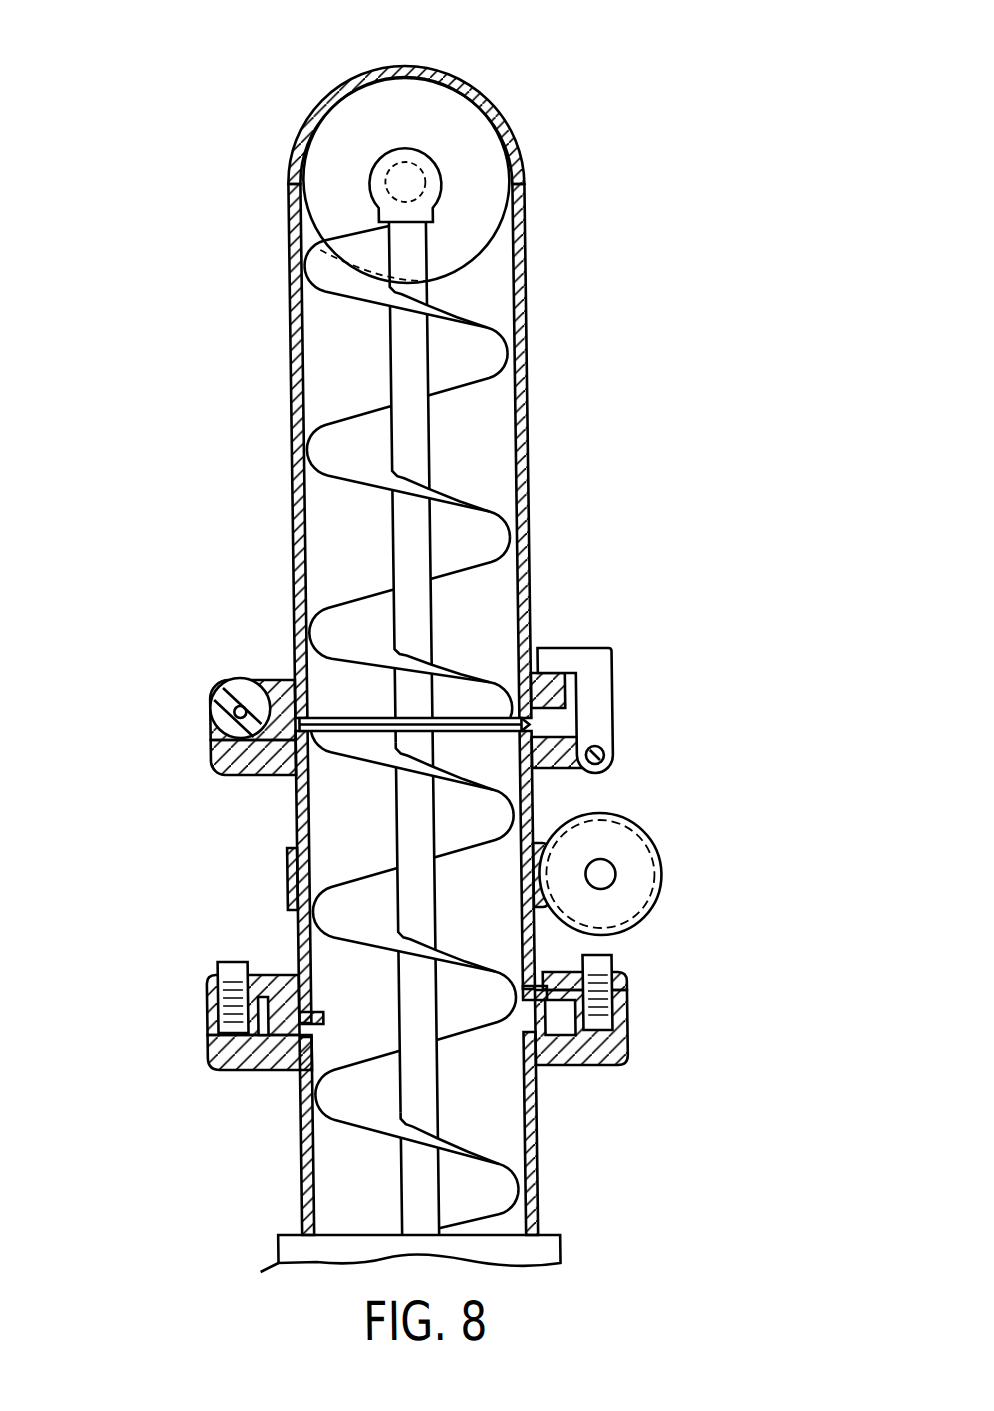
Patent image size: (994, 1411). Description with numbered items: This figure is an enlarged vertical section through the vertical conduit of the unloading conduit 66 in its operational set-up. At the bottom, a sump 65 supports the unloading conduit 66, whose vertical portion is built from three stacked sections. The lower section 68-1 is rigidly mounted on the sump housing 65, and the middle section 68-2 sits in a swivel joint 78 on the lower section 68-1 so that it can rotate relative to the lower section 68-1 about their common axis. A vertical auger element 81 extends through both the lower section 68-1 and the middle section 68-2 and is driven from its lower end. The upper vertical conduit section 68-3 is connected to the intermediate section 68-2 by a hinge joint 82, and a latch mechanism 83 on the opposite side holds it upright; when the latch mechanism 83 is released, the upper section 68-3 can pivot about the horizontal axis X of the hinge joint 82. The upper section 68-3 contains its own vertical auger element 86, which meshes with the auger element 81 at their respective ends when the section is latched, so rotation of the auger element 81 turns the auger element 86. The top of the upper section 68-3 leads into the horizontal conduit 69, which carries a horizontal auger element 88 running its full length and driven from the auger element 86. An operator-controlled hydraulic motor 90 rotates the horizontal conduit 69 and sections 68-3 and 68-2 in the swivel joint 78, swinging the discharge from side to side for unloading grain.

The sump 65 is at (549, 1234).
The unloading conduit 66 is at (343, 620).
The lower section 68-1 is at (330, 1163).
The middle section 68-2 is at (324, 820).
The upper vertical conduit section 68-3 is at (328, 555).
The horizontal conduit 69 is at (328, 78).
The swivel joint 78 is at (461, 712).
The vertical auger element 81 is at (350, 945).
The hinge joint 82 is at (207, 701).
The latch mechanism 83 is at (603, 680).
The vertical auger element 86 is at (490, 510).
The horizontal auger element 88 is at (485, 158).
The hydraulic motor 90 is at (645, 846).
The horizontal axis X is at (206, 700).